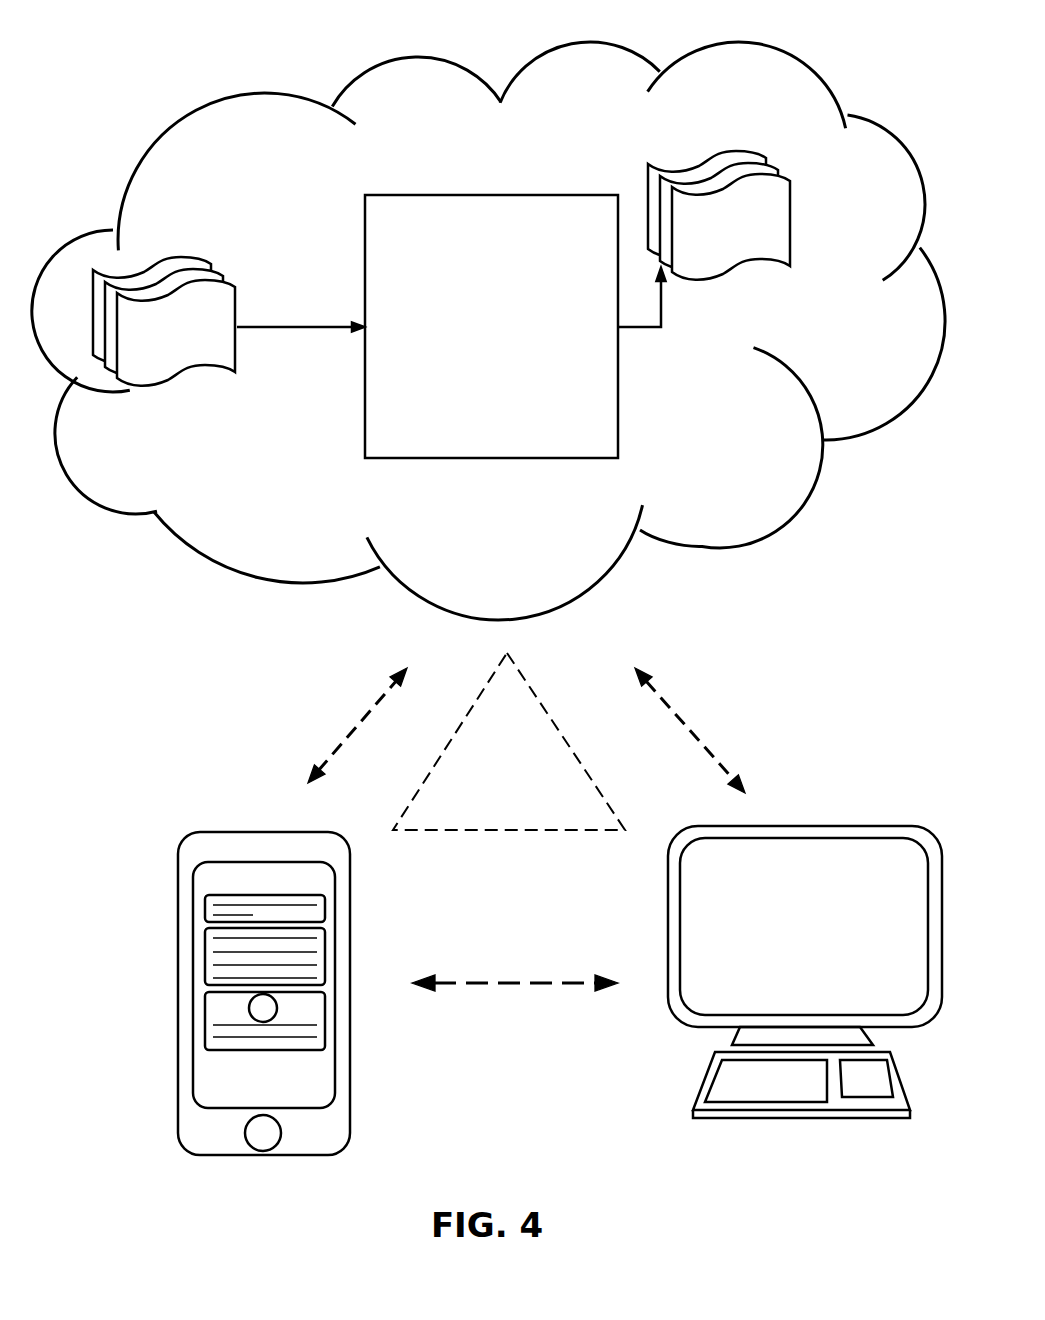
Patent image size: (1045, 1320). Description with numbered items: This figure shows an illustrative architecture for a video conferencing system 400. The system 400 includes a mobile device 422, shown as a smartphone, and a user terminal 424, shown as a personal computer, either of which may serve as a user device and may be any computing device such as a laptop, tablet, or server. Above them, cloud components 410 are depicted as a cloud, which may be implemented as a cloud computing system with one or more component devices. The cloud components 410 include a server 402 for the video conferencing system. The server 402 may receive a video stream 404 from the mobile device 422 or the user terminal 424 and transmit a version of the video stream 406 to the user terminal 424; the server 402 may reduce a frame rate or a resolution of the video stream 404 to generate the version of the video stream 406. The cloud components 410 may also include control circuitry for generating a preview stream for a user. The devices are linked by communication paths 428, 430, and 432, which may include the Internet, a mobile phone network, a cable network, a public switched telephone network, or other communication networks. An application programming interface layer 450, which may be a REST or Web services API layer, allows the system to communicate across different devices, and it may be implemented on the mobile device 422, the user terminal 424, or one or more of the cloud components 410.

The system 400 is at (488, 315).
The cloud components 410 is at (789, 100).
The server 402 is at (475, 338).
The video stream 404 is at (178, 263).
The version of the video stream 406 is at (770, 264).
The application programming interface (API) layer 450 is at (490, 769).
The communication path 428 is at (328, 698).
The communication path 430 is at (698, 685).
The communication path 432 is at (502, 955).
The mobile device 422 is at (253, 813).
The user terminal 424 is at (797, 820).